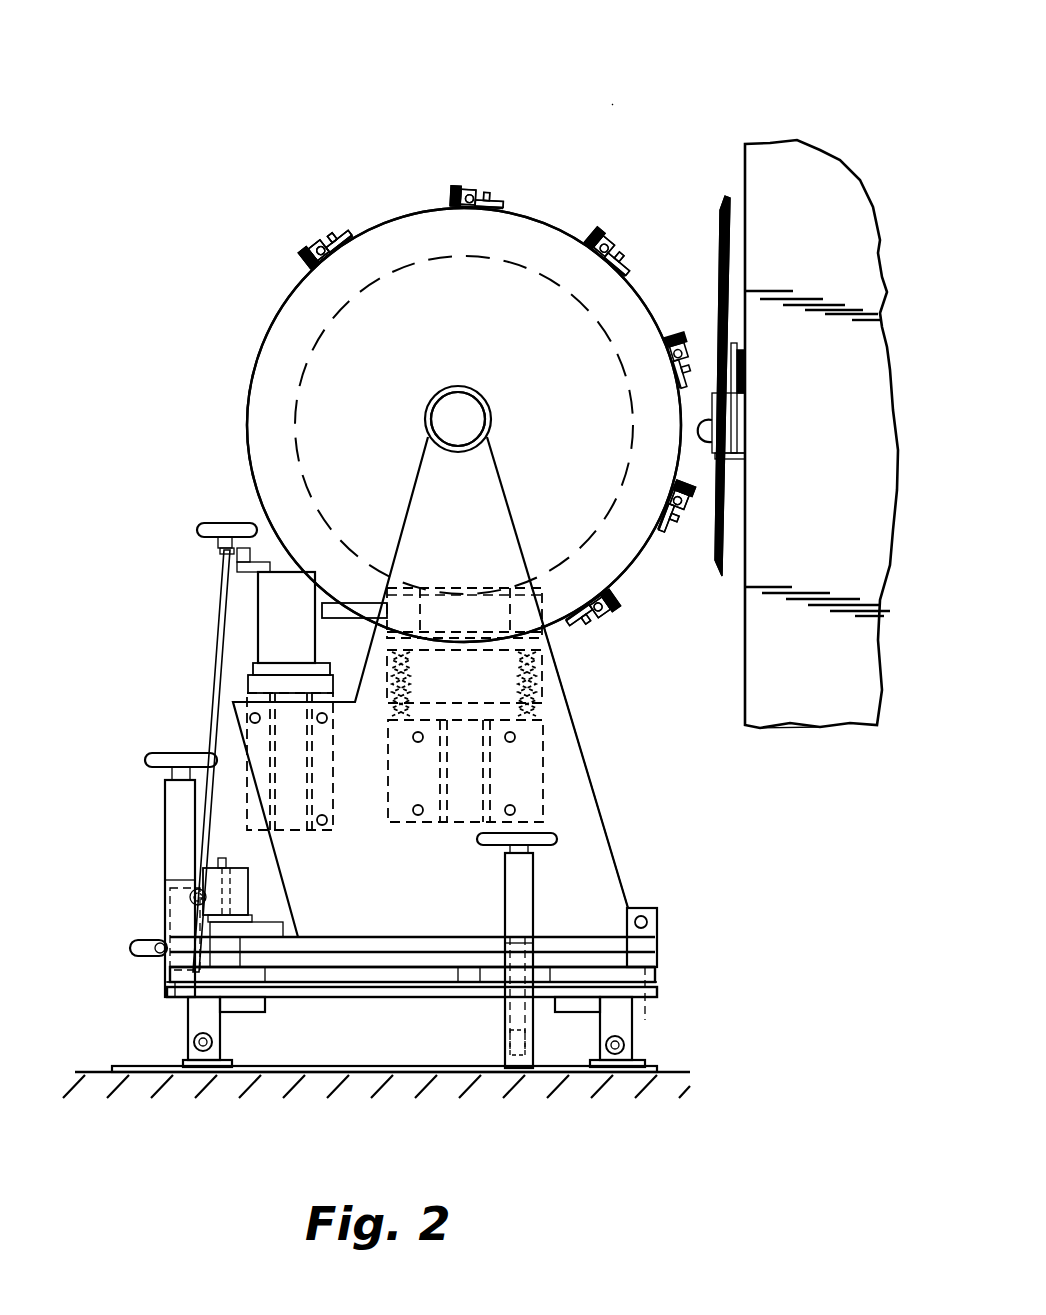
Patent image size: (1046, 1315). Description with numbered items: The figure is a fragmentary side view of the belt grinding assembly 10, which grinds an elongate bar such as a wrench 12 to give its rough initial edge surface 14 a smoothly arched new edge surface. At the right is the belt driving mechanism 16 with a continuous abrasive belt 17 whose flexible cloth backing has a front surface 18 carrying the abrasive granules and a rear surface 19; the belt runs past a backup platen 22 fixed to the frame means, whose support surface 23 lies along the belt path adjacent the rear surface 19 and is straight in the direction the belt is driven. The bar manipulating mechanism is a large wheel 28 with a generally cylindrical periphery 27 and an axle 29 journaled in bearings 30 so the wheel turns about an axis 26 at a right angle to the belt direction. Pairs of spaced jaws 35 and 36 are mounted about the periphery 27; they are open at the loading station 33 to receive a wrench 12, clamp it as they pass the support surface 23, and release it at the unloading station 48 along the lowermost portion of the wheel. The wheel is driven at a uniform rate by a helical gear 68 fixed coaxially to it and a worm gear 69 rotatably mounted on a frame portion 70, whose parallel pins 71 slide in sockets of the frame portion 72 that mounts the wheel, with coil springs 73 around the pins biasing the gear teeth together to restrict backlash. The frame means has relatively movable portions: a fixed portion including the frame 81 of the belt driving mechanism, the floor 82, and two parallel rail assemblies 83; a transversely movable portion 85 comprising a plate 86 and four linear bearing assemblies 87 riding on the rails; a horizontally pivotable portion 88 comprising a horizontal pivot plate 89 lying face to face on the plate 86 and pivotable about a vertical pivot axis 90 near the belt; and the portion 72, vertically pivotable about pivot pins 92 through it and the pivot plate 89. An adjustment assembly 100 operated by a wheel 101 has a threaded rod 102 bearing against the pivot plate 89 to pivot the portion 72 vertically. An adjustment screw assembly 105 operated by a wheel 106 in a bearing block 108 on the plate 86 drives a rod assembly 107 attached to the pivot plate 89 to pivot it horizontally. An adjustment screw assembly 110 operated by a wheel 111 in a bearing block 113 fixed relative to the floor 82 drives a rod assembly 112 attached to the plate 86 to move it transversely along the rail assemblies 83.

The belt grinding assembly 10 is at (613, 103).
The wrench 12 is at (490, 190).
The edge surface 14 is at (476, 188).
The belt driving mechanism 16 is at (797, 720).
The abrasive belt 17 is at (725, 205).
The front surface 18 is at (722, 222).
The rear surface 19 is at (728, 290).
The backup platen 22 is at (722, 412).
The support surface 23 is at (713, 432).
The axis 26 is at (492, 420).
The periphery 27 is at (283, 300).
The wheel 28 is at (275, 345).
The axle 29 is at (478, 432).
The bearings 30 is at (460, 418).
The loading station 33 is at (322, 190).
The first jaw 35 is at (345, 222).
The second jaw 36 is at (326, 240).
The unloading station 48 is at (650, 712).
The helical gear 68 is at (297, 388).
The worm gear 69 is at (445, 590).
The frame means portion 70 is at (464, 613).
The pins 71 is at (388, 712).
The frame portion 72 is at (600, 848).
The coil springs 73 is at (410, 690).
The frame 81 is at (866, 686).
The floor 82 is at (88, 1078).
The rail assemblies 83 is at (212, 1048).
The transversely movable portion 85 is at (397, 1003).
The transversely movable plate 86 is at (170, 993).
The linear bearing assemblies 87 is at (195, 1015).
The horizontally pivotable portion 88 is at (205, 977).
The horizontal pivot plate 89 is at (343, 975).
The vertical pivot axis 90 is at (642, 896).
The pivot pins 92 is at (648, 922).
The adjustment assembly 100 is at (203, 670).
The wheel 101 is at (197, 530).
The rod 102 is at (230, 860).
The adjustment screw assembly 105 is at (163, 840).
The wheel 106 is at (145, 760).
The rod assembly 107 is at (143, 942).
The bearing block 108 is at (165, 805).
The adjustment screw assembly 110 is at (537, 910).
The wheel 111 is at (485, 847).
The rod assembly 112 is at (525, 1050).
The bearing block 113 is at (515, 882).